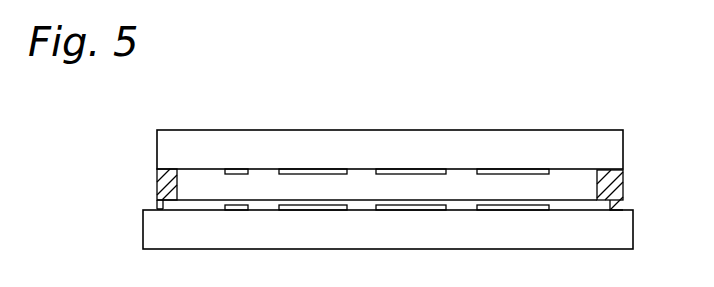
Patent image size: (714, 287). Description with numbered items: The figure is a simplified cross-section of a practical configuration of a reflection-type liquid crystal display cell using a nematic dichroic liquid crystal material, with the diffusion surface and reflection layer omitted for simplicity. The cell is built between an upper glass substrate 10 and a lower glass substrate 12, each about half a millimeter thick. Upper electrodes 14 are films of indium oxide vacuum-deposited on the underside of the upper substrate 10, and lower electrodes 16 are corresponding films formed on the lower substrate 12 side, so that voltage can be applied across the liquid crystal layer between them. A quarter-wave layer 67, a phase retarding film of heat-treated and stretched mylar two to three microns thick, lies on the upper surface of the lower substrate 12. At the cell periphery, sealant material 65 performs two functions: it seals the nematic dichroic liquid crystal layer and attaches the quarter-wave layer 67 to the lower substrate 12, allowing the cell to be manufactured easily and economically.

The upper cell substrate 10 is at (160, 147).
The lower cell substrate 12 is at (153, 232).
The upper electrodes 14 is at (302, 170).
The lower electrodes 16 is at (305, 208).
The sealant material 65 is at (163, 184).
The quarter-wave layer 67 is at (158, 204).